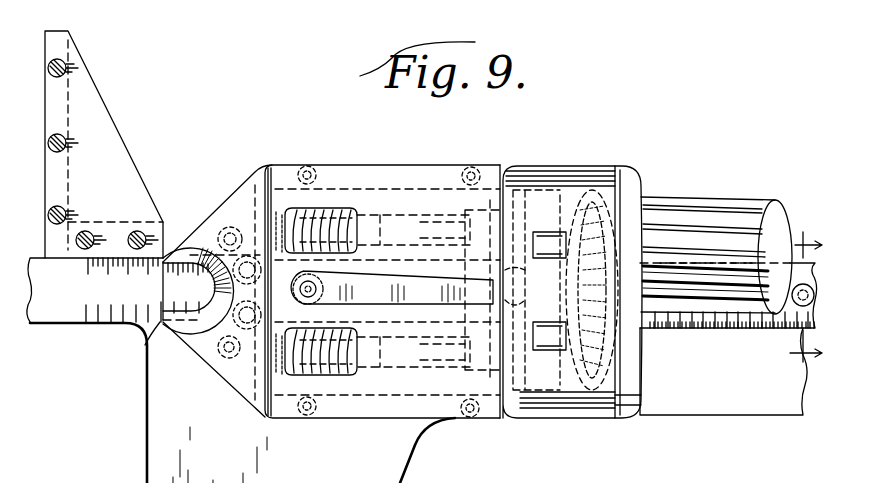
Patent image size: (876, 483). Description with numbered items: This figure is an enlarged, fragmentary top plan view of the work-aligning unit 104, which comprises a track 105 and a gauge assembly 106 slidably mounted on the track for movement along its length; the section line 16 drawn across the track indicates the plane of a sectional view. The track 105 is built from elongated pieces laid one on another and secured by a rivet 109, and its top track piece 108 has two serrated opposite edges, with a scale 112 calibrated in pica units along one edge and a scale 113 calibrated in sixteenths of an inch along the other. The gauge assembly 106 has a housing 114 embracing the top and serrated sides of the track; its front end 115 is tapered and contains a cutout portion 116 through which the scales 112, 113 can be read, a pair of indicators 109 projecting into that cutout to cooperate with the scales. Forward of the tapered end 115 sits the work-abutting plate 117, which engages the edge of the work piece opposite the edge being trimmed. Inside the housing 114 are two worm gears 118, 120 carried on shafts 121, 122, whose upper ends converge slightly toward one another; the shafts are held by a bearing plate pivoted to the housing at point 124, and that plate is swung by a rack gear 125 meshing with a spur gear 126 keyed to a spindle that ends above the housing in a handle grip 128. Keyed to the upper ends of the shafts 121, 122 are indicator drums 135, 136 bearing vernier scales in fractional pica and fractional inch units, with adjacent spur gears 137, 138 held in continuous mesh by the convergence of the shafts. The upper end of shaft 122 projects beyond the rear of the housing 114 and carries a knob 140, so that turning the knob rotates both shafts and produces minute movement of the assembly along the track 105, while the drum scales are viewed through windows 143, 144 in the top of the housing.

The section line 16 is at (807, 293).
The work-aligning unit 104 is at (712, 167).
The track 105 is at (740, 340).
The gauge assembly 106 is at (573, 160).
The top track piece 108 is at (40, 325).
The rivet / indicators 109 is at (163, 262).
The scale 112 is at (82, 325).
The scale 113 is at (163, 222).
The housing 114 is at (368, 178).
The front end 115 is at (222, 182).
The cutout portion 116 is at (173, 326).
The work-abutting plate 117 is at (90, 115).
The worm gear 118 is at (332, 375).
The worm gear 120 is at (322, 208).
The shaft 121 is at (418, 308).
The shaft 122 is at (425, 230).
The pivot point 124 is at (500, 300).
The rack gear 125 is at (258, 186).
The spur gear 126 is at (354, 172).
The handle grip 128 is at (419, 300).
The indicator drum 135 is at (578, 420).
The indicator drum 136 is at (590, 200).
The spur gear 137 is at (612, 412).
The spur gear 138 is at (626, 186).
The knob 140 is at (738, 210).
The window 143 is at (548, 352).
The window 144 is at (546, 232).